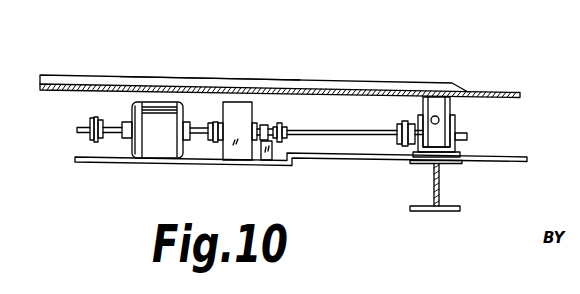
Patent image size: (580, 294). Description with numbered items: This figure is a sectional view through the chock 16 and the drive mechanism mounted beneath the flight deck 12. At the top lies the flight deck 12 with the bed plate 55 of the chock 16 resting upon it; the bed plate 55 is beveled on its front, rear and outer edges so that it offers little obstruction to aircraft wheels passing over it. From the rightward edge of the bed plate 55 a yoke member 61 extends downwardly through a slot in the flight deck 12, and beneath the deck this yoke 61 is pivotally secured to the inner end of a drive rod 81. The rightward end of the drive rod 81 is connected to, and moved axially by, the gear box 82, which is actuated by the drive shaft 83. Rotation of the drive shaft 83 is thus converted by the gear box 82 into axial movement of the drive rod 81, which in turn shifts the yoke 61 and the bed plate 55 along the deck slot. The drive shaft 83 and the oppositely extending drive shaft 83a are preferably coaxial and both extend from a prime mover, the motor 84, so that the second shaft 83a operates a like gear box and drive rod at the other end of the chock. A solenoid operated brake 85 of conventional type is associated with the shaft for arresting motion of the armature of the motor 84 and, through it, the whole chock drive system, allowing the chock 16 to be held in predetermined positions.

The flight deck 12 is at (493, 92).
The chock 16 is at (288, 80).
The bed plate 55 is at (215, 78).
The yoke members 61 is at (451, 108).
The drive rod 81 is at (431, 119).
The gear box 82 is at (460, 126).
The drive shaft 83 is at (332, 131).
The drive shaft 83a is at (86, 124).
The motor 84 is at (158, 146).
The solenoid operated brake 85 is at (242, 161).